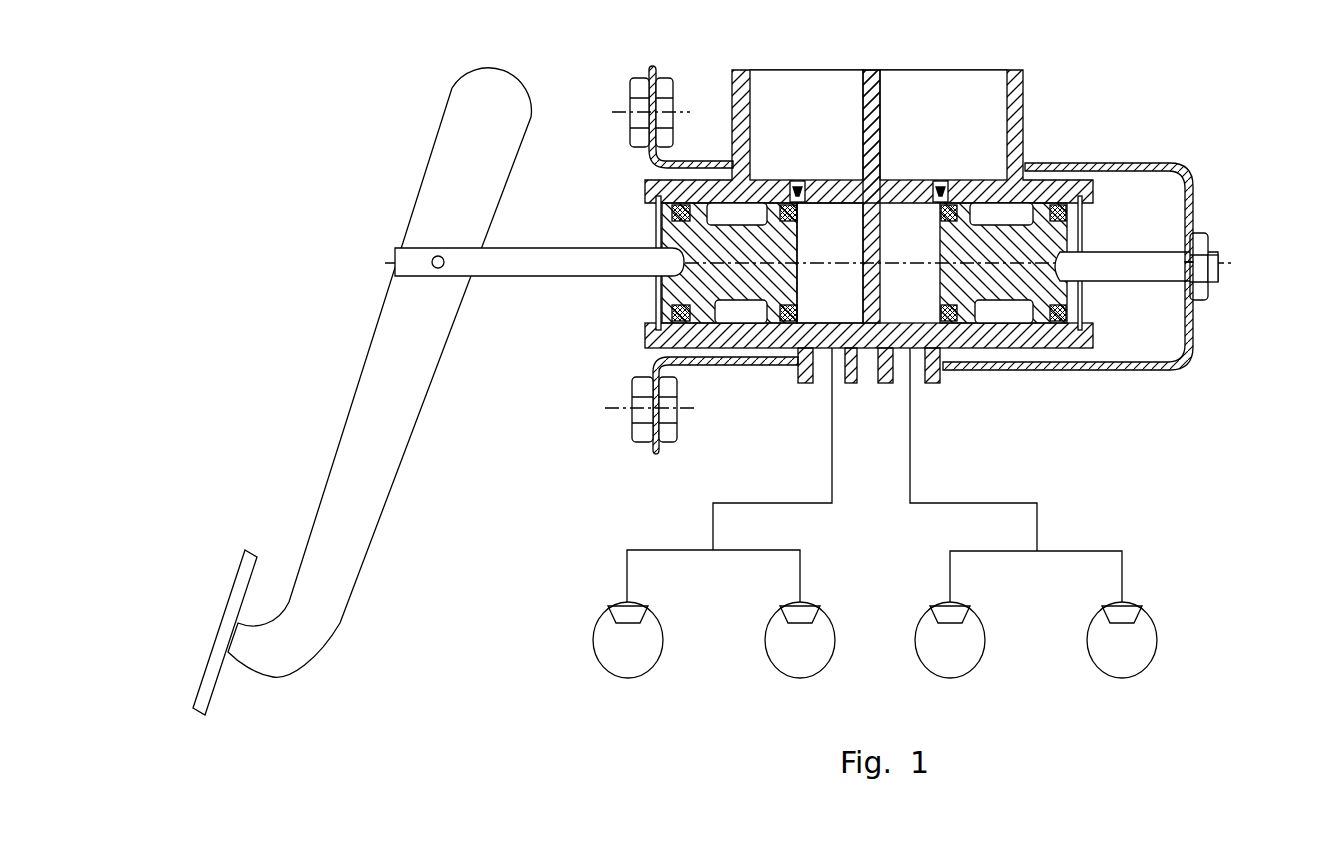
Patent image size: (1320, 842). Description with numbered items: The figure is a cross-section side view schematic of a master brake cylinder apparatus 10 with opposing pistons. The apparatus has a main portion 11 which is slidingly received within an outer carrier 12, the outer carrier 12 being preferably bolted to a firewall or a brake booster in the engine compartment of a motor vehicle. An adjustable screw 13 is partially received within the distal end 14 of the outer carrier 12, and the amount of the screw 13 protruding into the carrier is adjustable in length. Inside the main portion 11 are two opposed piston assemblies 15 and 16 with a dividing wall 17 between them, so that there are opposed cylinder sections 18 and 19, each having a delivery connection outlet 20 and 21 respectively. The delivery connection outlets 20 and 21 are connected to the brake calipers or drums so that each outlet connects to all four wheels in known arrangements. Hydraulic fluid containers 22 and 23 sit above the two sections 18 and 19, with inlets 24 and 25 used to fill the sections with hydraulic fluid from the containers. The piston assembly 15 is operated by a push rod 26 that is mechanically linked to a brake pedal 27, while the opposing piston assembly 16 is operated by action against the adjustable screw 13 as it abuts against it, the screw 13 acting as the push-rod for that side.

The brake cylinder apparatus 10 is at (1082, 183).
The main portion 11 is at (870, 72).
The outer carrier 12 is at (1040, 165).
The adjustable screw 13 is at (1212, 257).
The distal end 14 is at (1193, 330).
The piston assembly 15 is at (717, 348).
The opposing piston assembly 16 is at (1015, 305).
The dividing wall 17 is at (852, 297).
The cylinder section 18 is at (795, 318).
The cylinder section 19 is at (930, 300).
The delivery connection outlet 20 is at (807, 505).
The delivery connection outlet 21 is at (940, 505).
The hydraulic fluid container 22 is at (783, 88).
The hydraulic fluid container 23 is at (922, 90).
The inlet 24 is at (800, 178).
The inlet 25 is at (940, 178).
The push rod 26 is at (538, 268).
The brake pedal 27 is at (352, 553).